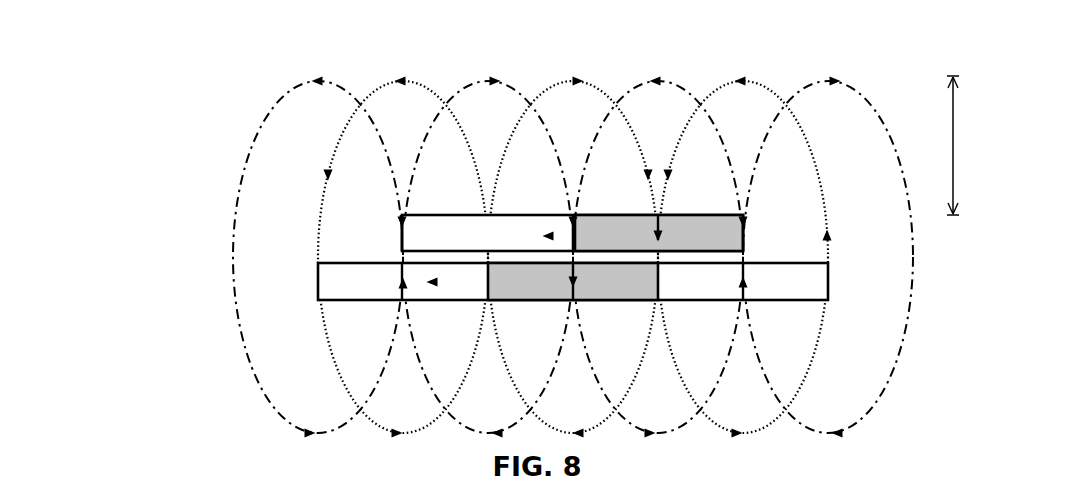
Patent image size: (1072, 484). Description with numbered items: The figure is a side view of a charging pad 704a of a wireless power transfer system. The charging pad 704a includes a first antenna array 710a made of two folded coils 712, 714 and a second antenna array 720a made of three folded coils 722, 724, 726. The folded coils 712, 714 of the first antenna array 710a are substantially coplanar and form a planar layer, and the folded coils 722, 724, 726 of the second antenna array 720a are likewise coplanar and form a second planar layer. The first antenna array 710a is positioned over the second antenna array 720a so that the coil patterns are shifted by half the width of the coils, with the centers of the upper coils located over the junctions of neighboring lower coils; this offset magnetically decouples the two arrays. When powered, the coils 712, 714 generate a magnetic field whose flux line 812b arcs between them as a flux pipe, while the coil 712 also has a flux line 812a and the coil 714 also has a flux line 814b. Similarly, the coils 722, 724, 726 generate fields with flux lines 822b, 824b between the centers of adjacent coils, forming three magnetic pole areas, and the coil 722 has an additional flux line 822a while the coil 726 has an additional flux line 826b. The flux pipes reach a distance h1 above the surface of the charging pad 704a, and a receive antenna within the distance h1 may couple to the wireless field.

The charging pad 704a is at (184, 128).
The first antenna array 710a is at (535, 233).
The folded coil 712 is at (486, 236).
The folded coil 714 is at (659, 233).
The second antenna array 720a is at (533, 281).
The folded coil 722 is at (386, 281).
The folded coil 724 is at (573, 281).
The folded coil 726 is at (710, 281).
The magnetic flux line 822a is at (278, 96).
The magnetic flux line 812a is at (371, 96).
The magnetic flux line 822b is at (455, 96).
The magnetic flux line 812b is at (540, 96).
The magnetic flux line 824b is at (625, 96).
The magnetic flux line 814b is at (710, 96).
The magnetic flux line 826b is at (805, 96).
The distance h1 is at (964, 145).